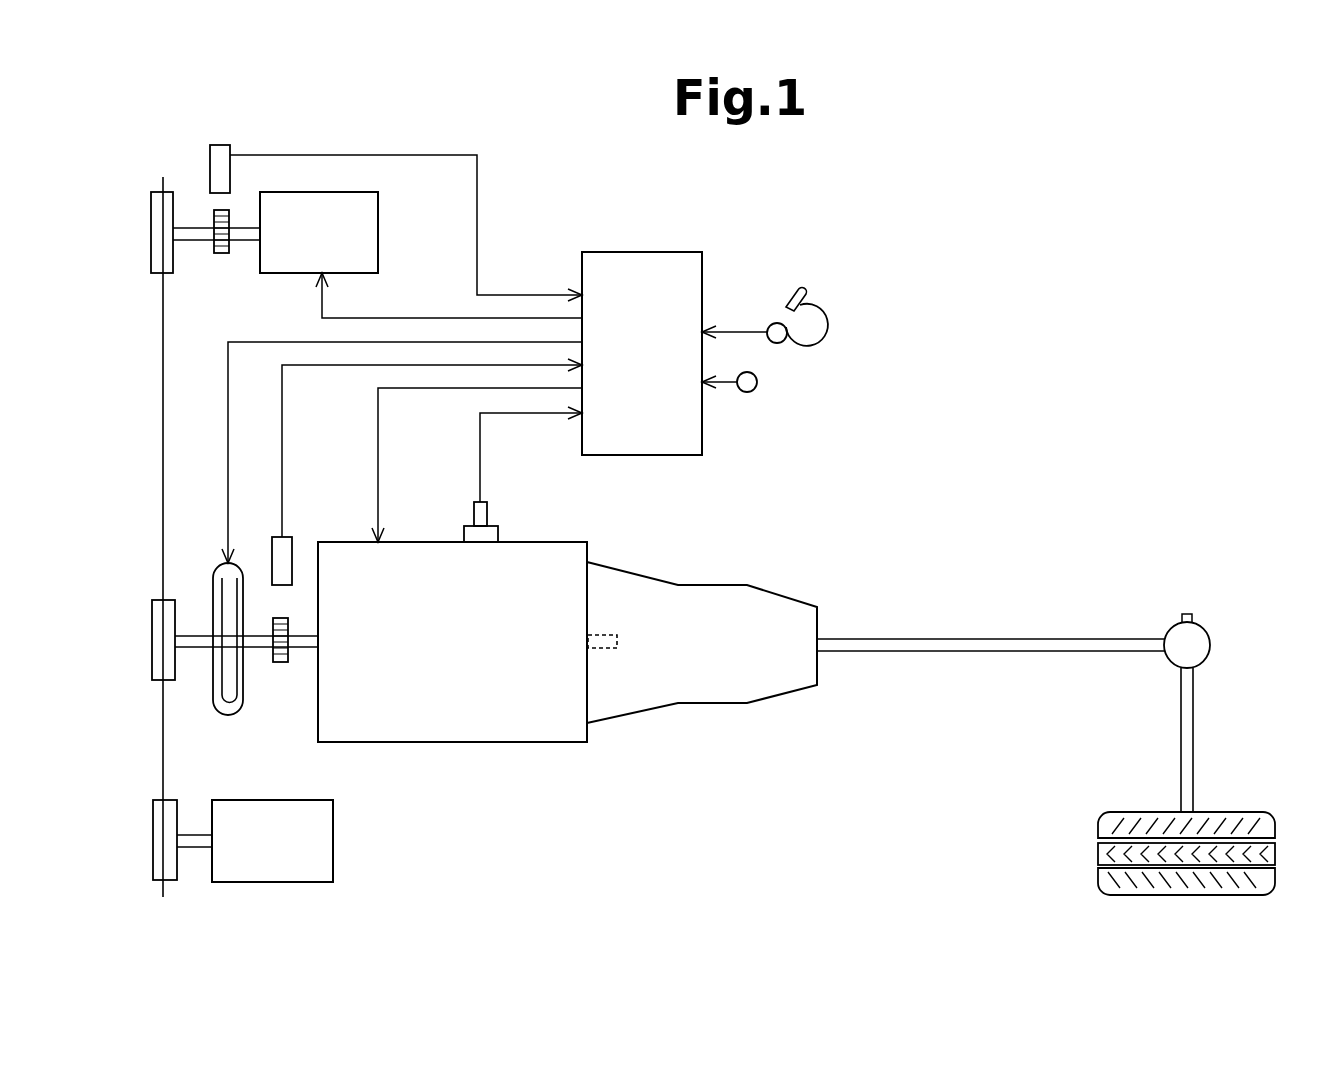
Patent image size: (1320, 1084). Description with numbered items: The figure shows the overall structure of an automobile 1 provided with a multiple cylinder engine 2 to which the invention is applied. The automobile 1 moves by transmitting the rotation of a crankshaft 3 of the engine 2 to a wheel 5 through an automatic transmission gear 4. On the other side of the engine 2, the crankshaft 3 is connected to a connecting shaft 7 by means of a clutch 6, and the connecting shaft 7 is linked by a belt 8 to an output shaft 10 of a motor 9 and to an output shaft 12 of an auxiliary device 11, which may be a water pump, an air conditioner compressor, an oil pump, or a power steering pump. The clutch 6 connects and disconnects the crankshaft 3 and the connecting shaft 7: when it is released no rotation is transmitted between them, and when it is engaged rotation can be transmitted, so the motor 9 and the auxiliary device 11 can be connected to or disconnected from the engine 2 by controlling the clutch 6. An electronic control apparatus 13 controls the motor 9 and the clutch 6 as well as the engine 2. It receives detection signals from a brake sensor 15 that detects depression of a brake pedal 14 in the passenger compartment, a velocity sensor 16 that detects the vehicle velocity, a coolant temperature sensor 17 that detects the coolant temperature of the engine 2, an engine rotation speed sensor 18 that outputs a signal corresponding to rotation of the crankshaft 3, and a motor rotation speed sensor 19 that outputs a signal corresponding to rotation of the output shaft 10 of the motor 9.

The automobile 1 is at (806, 812).
The engine 2 is at (478, 742).
The crankshaft 3 is at (305, 652).
The automatic transmission gear 4 is at (713, 703).
The wheel 5 is at (1098, 826).
The clutch 6 is at (213, 675).
The connecting shaft 7 is at (200, 632).
The belt 8 is at (163, 347).
The motor 9 is at (380, 233).
The output shaft 10 is at (191, 243).
The auxiliary device 11 is at (334, 840).
The output shaft 12 is at (192, 830).
The electronic control apparatus 13 is at (640, 252).
The brake pedal 14 is at (806, 292).
The brake sensor 15 is at (770, 323).
The velocity sensor 16 is at (757, 382).
The coolant temperature sensor 17 is at (500, 535).
The engine rotation speed sensor 18 is at (293, 545).
The motor rotation speed sensor 19 is at (208, 170).